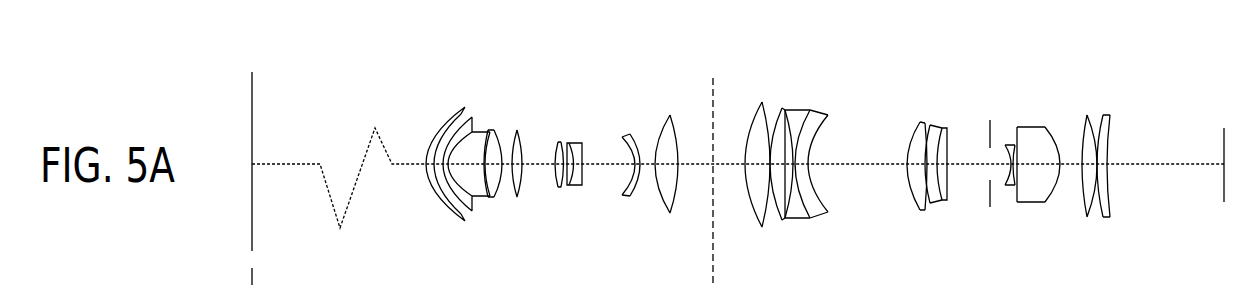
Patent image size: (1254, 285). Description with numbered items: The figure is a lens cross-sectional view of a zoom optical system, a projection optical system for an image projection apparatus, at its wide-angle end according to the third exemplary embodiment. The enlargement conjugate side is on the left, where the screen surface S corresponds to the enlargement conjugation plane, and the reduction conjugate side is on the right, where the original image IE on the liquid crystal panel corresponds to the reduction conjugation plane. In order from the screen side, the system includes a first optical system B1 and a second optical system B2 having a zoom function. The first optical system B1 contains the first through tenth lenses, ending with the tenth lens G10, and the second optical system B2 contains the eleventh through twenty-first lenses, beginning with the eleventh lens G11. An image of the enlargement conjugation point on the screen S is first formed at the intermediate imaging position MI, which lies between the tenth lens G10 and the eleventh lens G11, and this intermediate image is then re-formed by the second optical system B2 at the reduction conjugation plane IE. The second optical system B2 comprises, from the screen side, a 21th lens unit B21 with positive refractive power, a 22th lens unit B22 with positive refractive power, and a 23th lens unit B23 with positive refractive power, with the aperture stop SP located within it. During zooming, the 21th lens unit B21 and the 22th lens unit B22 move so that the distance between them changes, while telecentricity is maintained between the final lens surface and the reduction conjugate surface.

The screen surface S is at (250, 78).
The intermediate imaging position MI is at (712, 84).
The reduction conjugation plane IE is at (1222, 134).
The aperture stop SP is at (990, 122).
The first optical system B1 is at (693, 32).
The second optical system B2 is at (1126, 32).
The 21th lens unit B21 is at (838, 232).
The 22th lens unit B22 is at (1053, 232).
The 23th lens unit B23 is at (1112, 232).
The 10th lens G10 is at (665, 124).
The 11th lens G11 is at (762, 101).